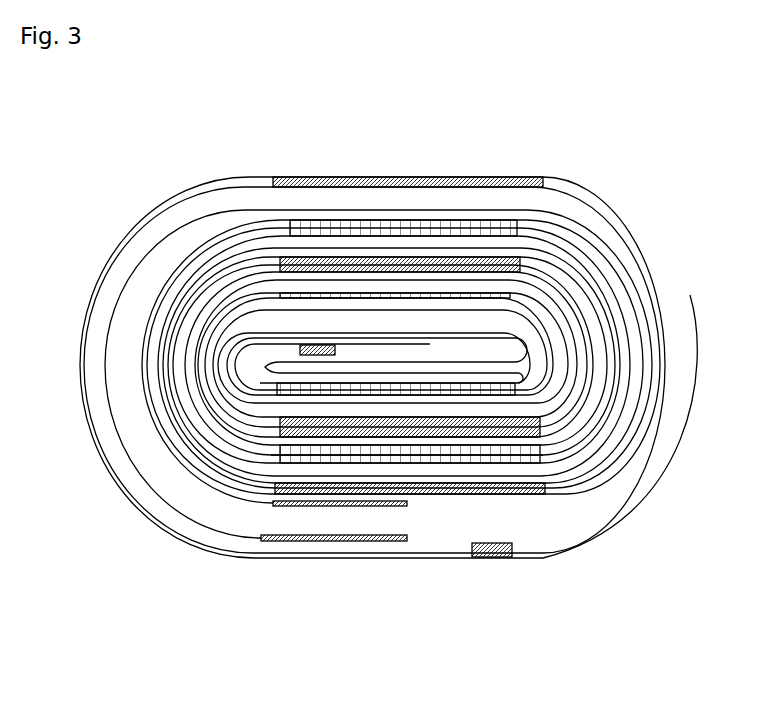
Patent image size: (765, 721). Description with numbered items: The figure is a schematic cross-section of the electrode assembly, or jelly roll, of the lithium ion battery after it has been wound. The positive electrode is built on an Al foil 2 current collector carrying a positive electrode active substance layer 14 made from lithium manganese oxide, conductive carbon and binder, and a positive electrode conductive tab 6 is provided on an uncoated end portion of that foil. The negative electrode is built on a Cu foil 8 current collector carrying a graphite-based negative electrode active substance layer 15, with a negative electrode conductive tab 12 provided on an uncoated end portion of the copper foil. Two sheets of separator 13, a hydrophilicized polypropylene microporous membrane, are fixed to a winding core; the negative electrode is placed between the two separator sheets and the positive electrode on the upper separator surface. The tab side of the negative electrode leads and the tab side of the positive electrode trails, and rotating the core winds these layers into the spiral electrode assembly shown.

The Al foil 2 is at (595, 540).
The positive electrode conductive tab 6 is at (487, 557).
The Cu foil 8 is at (200, 380).
The negative electrode conductive tab 12 is at (320, 345).
The separator 13 is at (168, 245).
The positive electrode active substance layer 14 is at (482, 178).
The negative electrode active substance layer 15 is at (283, 450).